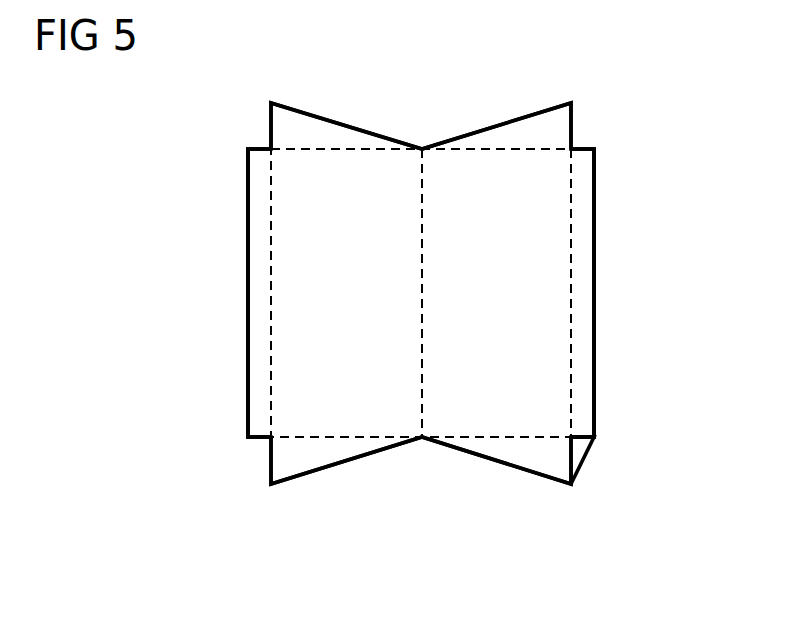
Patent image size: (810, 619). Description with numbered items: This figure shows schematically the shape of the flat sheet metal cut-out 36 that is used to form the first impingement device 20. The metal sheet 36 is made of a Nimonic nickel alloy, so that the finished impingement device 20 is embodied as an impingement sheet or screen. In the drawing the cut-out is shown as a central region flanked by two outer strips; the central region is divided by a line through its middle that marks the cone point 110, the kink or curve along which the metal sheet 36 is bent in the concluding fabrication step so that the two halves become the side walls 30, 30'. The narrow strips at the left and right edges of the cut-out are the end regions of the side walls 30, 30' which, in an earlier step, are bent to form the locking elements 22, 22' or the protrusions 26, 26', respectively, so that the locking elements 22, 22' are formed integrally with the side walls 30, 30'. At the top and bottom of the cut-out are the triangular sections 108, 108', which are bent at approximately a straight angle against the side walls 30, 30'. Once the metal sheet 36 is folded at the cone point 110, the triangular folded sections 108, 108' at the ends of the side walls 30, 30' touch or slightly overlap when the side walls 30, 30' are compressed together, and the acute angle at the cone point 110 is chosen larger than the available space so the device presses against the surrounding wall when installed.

The first impingement device 20 is at (624, 204).
The locking element 22 is at (190, 293).
The protrusion 26 is at (190, 293).
The locking element 22' is at (655, 293).
The protrusion 26' is at (655, 293).
The side wall 30 is at (346, 109).
The side wall 30' is at (496, 109).
The triangular section 108 is at (346, 497).
The triangular section 108' is at (496, 497).
The cone point 110 is at (422, 396).
The metal sheet 36 is at (593, 456).